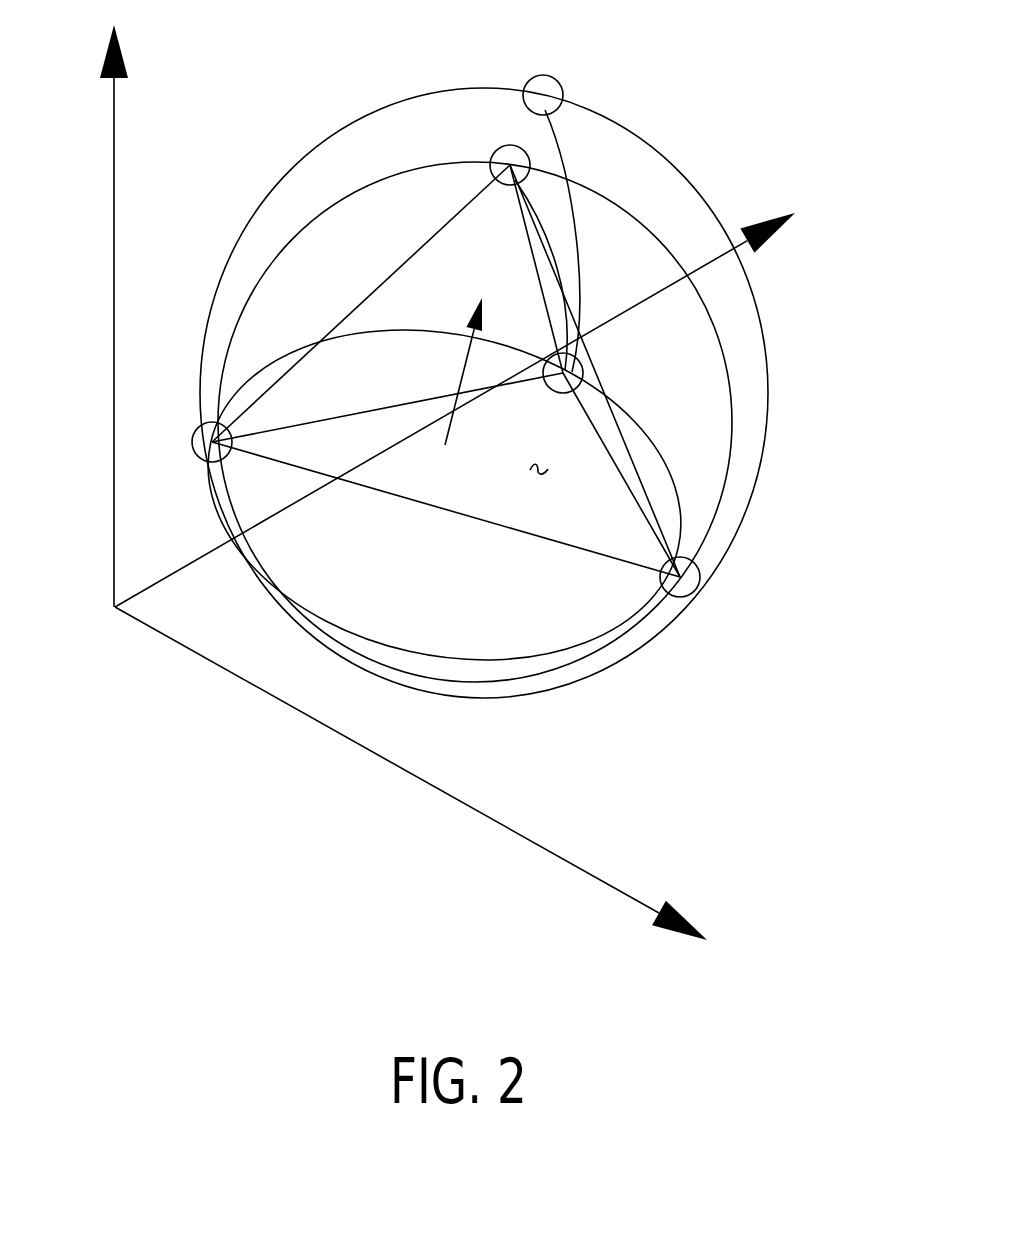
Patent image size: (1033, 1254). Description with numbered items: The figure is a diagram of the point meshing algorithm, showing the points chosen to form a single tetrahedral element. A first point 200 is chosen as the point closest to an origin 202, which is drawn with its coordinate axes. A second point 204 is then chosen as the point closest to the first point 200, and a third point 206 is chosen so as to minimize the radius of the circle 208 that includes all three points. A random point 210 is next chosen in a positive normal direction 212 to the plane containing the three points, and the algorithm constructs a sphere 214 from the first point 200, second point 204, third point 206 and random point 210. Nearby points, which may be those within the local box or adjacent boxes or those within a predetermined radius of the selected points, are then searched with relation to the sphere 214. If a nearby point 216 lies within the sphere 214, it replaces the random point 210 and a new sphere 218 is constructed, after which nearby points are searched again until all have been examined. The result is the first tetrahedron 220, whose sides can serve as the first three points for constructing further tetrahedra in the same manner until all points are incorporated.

The first point 200 is at (203, 433).
The origin 202 is at (118, 609).
The second point 204 is at (688, 595).
The third point 206 is at (578, 362).
The circle 208 is at (677, 500).
The random point 210 is at (548, 90).
The positive normal direction 212 is at (452, 432).
The sphere 214 is at (710, 197).
The nearby point 216 is at (504, 150).
The new sphere 218 is at (397, 170).
The first tetrahedron 220 is at (530, 470).